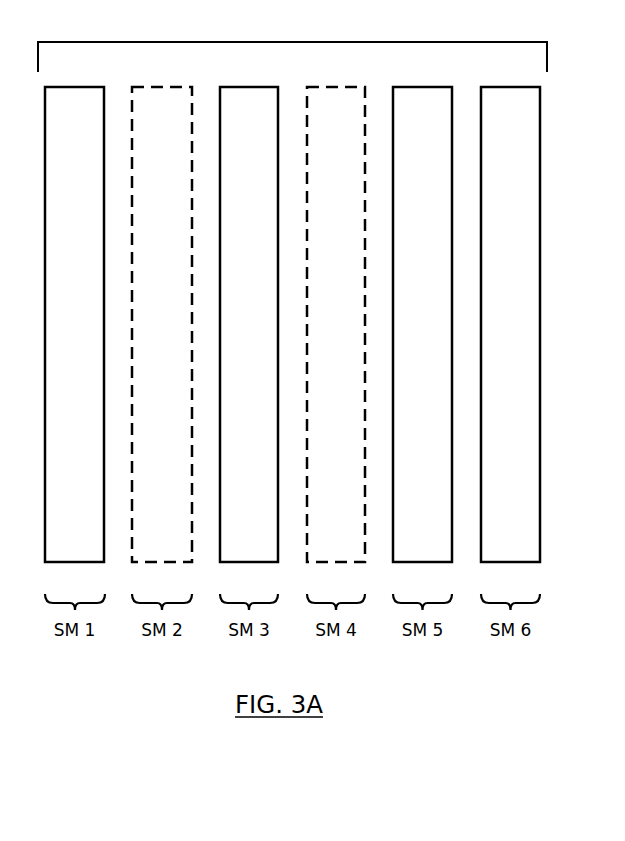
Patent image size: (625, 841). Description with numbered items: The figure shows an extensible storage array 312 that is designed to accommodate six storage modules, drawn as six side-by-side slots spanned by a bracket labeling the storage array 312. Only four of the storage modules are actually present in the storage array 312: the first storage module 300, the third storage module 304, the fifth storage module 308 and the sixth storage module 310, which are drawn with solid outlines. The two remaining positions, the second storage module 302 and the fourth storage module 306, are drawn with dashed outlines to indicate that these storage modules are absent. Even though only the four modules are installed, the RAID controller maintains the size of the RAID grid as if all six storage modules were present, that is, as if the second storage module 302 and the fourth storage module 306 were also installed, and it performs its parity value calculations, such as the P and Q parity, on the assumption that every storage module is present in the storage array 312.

The storage module SM 1 300 is at (59, 333).
The storage module SM 2 302 is at (146, 333).
The storage module SM 3 304 is at (234, 333).
The storage module SM 4 306 is at (320, 333).
The storage module SM 5 308 is at (407, 333).
The storage module SM 6 310 is at (495, 333).
The storage array 312 is at (292, 44).